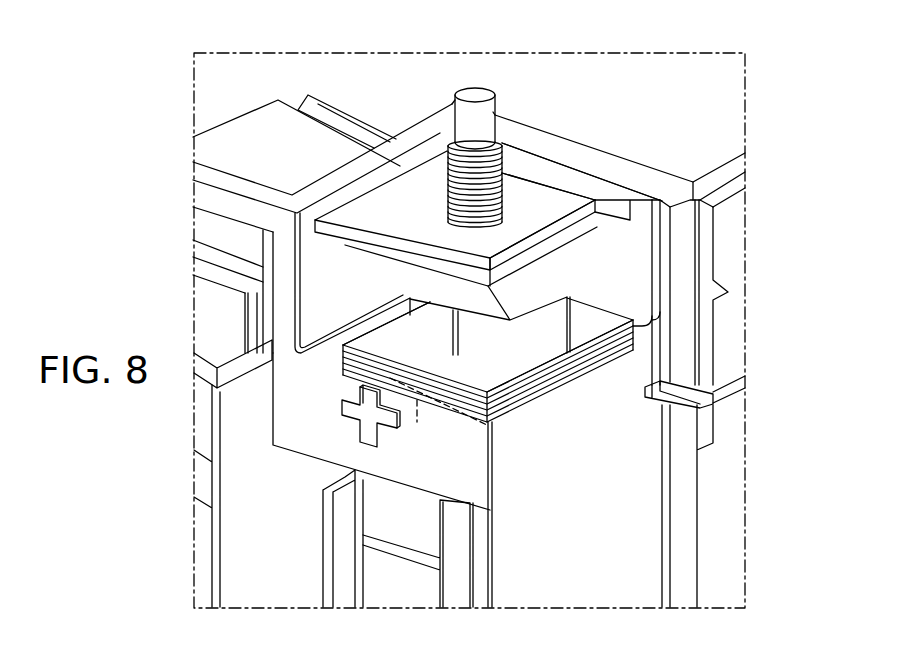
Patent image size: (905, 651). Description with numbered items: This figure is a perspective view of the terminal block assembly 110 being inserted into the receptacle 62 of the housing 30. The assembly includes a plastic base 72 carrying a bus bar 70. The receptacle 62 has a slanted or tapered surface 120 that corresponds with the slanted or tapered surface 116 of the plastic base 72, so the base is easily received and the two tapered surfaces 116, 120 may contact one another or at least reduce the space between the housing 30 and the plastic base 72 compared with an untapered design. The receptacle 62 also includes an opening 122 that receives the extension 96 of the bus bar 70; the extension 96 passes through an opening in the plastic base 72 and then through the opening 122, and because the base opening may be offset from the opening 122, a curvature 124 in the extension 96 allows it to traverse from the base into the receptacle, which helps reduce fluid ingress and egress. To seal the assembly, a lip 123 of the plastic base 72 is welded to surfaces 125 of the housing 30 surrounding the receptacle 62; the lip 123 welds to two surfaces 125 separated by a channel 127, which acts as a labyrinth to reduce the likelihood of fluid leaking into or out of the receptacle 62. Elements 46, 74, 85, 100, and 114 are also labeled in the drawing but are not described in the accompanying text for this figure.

The housing 30 is at (733, 240).
The leveling assembly 46 is at (442, 92).
The receptacle 62 is at (478, 378).
The bus bar 70 is at (600, 222).
The plastic base 72 is at (615, 221).
The threaded bolt 74 is at (485, 113).
The plate rear portion 85 is at (537, 177).
The extension 96 is at (550, 342).
The plate front edge 100 is at (540, 233).
The terminal block assembly 110 is at (722, 300).
The top rail 114 is at (590, 187).
The tapered surface 116 is at (473, 302).
The tapered surface 120 is at (417, 413).
The opening 122 is at (452, 346).
The lip 123 is at (338, 248).
The curvature 124 is at (520, 347).
The surface 125 is at (380, 335).
The channel 127 is at (320, 353).